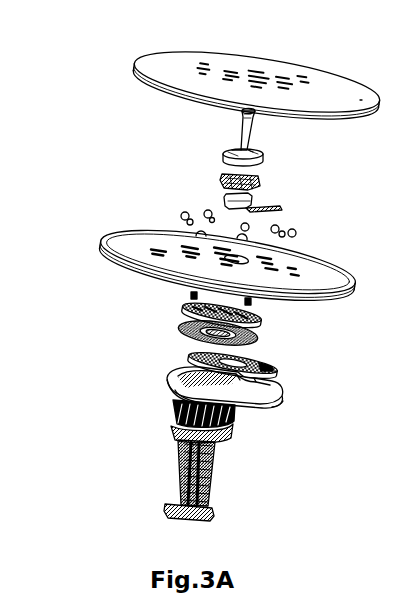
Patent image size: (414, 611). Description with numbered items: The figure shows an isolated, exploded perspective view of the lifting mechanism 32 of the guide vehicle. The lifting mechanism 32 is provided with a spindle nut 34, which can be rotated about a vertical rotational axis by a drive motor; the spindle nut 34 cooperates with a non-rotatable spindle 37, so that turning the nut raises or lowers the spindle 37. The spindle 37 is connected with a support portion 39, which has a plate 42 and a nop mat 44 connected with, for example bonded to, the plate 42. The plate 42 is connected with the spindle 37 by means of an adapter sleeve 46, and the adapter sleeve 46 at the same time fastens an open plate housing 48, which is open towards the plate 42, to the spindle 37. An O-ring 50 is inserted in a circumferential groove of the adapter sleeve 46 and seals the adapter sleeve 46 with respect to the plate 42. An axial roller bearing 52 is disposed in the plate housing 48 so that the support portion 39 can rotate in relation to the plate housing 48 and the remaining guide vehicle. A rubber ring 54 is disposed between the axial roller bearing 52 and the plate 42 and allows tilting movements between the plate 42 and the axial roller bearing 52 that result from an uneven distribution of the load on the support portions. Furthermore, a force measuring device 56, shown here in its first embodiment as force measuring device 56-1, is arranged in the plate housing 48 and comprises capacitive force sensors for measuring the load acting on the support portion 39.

The lifting mechanism 32 is at (140, 130).
The spindle nut 34 is at (173, 410).
The spindle 37 is at (180, 463).
The support portion 39 is at (357, 99).
The plate 42 is at (330, 272).
The nop mat 44 is at (358, 101).
The adapter sleeve 46 is at (223, 155).
The plate housing 48 is at (167, 383).
The O-ring 50 is at (221, 180).
The axial roller bearing 52 is at (178, 333).
The rubber ring 54 is at (181, 308).
The force measuring device 56 is at (254, 201).
The force measuring device 56-1 is at (277, 367).